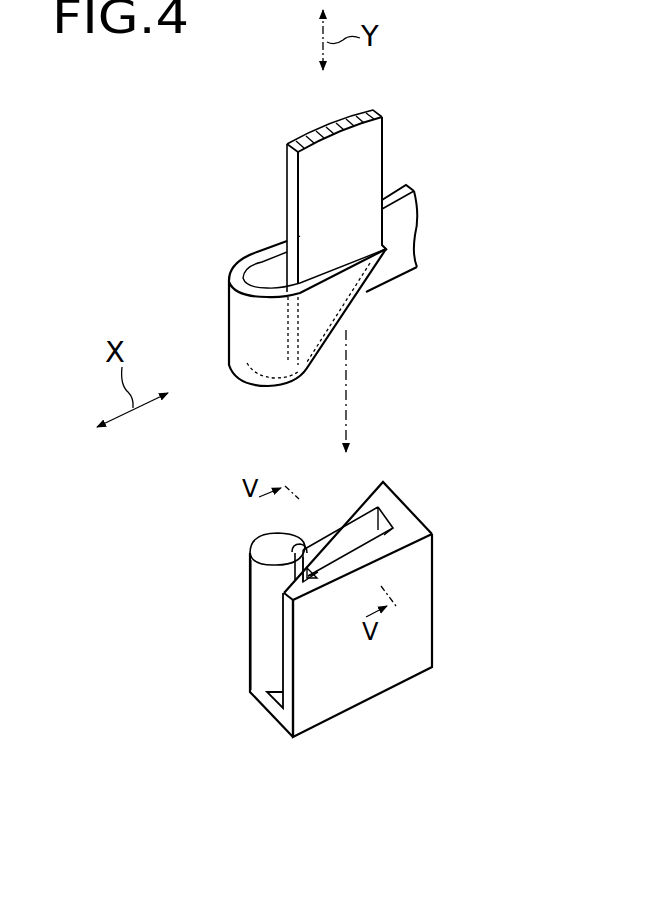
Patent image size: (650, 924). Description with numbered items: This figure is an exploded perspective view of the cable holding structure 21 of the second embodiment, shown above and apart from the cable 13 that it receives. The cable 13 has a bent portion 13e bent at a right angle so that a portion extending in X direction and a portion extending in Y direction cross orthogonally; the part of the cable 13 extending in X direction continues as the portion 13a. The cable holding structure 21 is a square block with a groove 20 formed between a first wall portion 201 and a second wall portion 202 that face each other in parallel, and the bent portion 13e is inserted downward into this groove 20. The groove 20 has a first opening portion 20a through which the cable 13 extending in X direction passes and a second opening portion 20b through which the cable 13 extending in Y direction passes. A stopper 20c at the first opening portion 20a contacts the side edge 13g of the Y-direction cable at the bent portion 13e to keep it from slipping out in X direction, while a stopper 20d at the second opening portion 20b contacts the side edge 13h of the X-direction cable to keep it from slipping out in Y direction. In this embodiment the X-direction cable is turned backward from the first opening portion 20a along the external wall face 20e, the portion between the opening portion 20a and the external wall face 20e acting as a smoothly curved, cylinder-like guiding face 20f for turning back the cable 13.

The cable 13 is at (384, 158).
The terminal bar portion 13a is at (403, 222).
The bent portion 13e is at (372, 290).
The side edge 13g is at (293, 330).
The side edge 13h is at (347, 265).
The groove 20 is at (387, 490).
The first wall portion 201 is at (361, 518).
The second wall portion 202 is at (400, 538).
The cable holding structure 21 is at (434, 593).
The first opening portion 20a is at (279, 653).
The second opening portion 20b is at (323, 547).
The stopper 20c is at (303, 575).
The stopper 20d is at (335, 544).
The external wall face 20e is at (342, 500).
The guiding face 20f is at (258, 630).